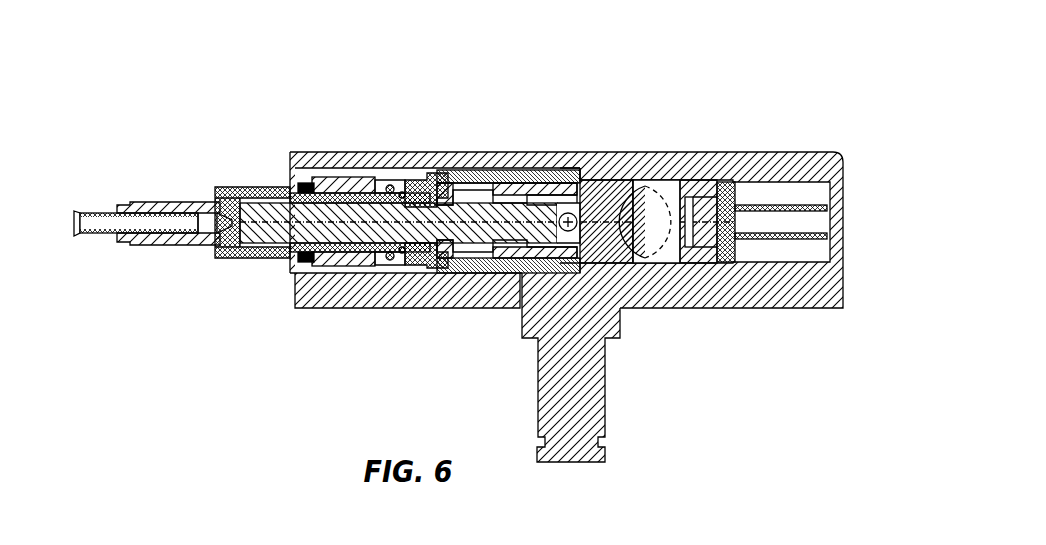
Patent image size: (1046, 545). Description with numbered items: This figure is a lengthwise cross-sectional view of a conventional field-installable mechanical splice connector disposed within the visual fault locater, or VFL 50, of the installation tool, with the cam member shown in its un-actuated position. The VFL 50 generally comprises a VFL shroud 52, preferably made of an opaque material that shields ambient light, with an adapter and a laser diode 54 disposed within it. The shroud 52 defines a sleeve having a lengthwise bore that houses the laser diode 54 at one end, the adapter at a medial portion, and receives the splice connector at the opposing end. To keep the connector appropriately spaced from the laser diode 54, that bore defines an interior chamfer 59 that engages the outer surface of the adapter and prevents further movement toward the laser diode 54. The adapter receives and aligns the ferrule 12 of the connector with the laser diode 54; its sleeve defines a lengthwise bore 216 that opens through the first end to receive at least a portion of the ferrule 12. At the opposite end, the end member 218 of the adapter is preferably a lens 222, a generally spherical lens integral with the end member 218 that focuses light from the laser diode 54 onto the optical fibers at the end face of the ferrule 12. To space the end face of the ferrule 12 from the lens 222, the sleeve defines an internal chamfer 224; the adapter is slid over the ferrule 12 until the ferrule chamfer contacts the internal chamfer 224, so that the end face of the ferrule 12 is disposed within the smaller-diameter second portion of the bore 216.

The ferrule 12 is at (460, 243).
The VFL 50 is at (850, 190).
The VFL shroud 52 is at (813, 157).
The laser diode 54 is at (728, 190).
The interior chamfer 59 is at (578, 170).
The bore 216 is at (524, 305).
The end member 218 is at (613, 185).
The lens 222 is at (640, 250).
The internal chamfer 224 is at (502, 197).